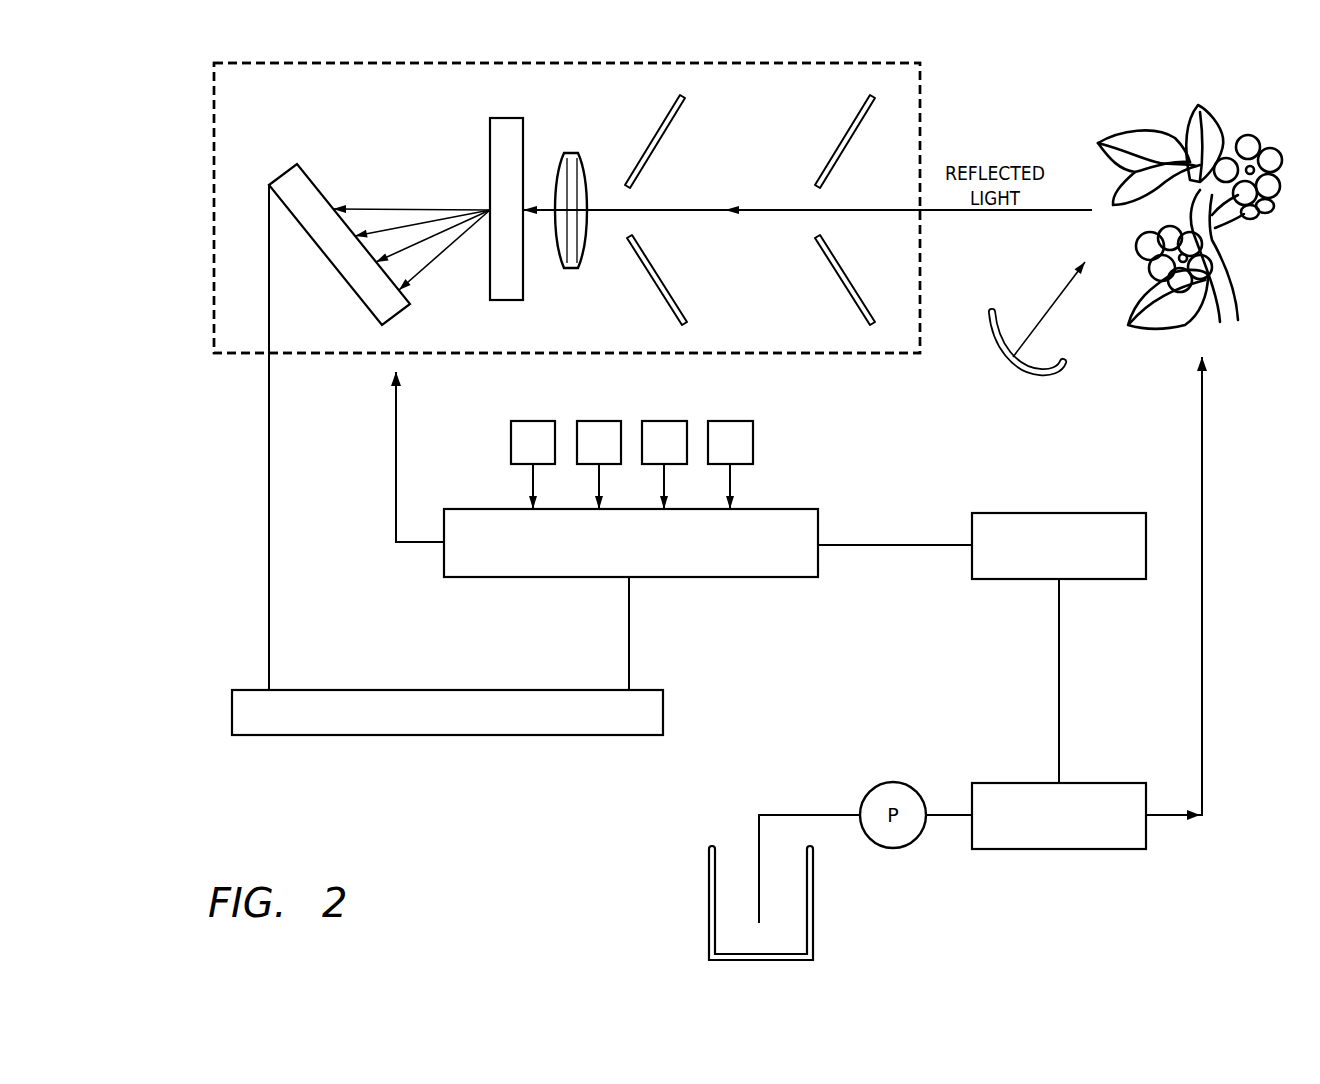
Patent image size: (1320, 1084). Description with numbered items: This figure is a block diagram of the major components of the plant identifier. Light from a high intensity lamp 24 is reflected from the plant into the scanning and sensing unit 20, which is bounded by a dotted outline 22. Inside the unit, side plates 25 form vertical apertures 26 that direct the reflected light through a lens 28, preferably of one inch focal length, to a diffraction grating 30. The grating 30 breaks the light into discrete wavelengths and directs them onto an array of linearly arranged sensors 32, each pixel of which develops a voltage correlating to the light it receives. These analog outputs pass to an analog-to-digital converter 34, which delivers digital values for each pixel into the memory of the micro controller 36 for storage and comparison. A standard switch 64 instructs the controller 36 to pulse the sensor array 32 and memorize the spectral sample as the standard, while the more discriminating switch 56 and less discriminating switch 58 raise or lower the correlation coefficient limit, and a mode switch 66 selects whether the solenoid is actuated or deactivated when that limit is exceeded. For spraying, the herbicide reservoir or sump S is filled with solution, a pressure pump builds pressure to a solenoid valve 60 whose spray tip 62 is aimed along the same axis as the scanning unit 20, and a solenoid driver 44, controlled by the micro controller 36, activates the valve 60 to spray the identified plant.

The sensing unit 20 is at (270, 102).
The housing 22 is at (214, 283).
The high intensity lamp 24 is at (1022, 378).
The side plates 25 is at (657, 132).
The vertical apertures 26 is at (682, 208).
The lens 28 is at (571, 153).
The diffraction grating 30 is at (490, 165).
The sensor array 32 is at (344, 280).
The analog-to-digital converter 34 is at (232, 712).
The micro controller 36 is at (760, 578).
The solenoid driver 44 is at (1076, 513).
The more discriminating switch 56 is at (525, 421).
The less discriminating switch 58 is at (593, 421).
The solenoid valve 60 is at (1090, 783).
The spray tip 62 is at (1167, 818).
The standard switch 64 is at (668, 421).
The mode switch 66 is at (736, 421).
The herbicide reservoir or sump S is at (709, 905).